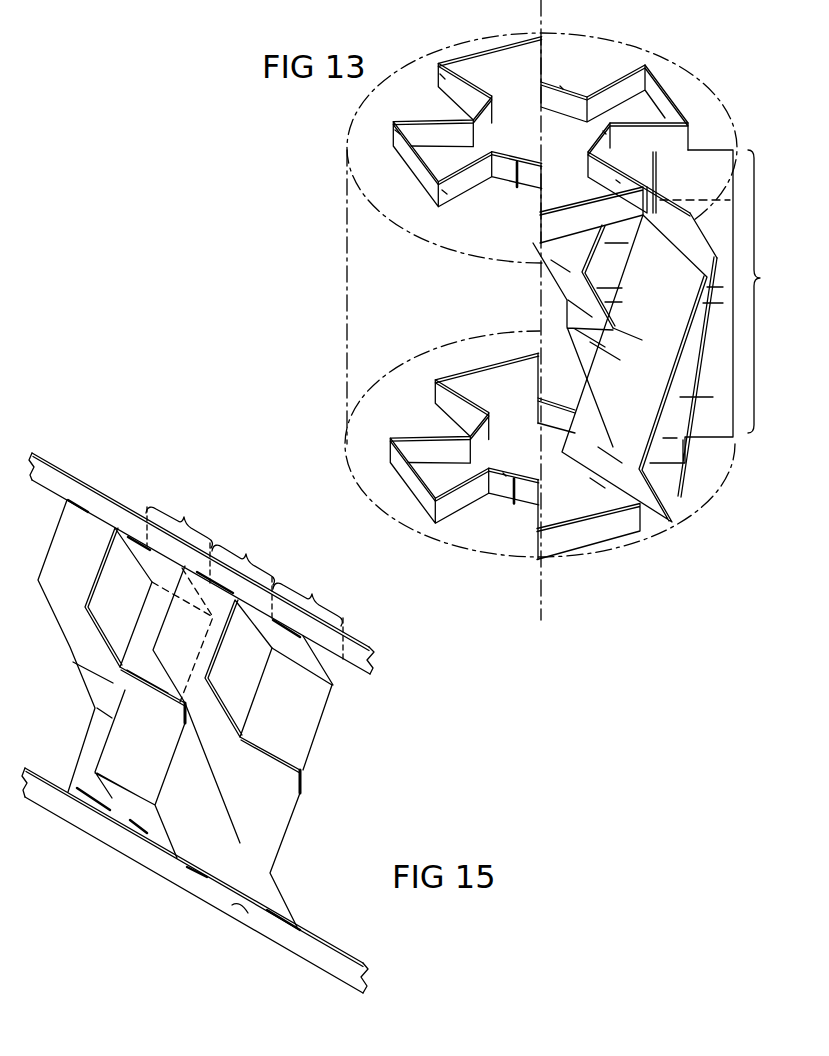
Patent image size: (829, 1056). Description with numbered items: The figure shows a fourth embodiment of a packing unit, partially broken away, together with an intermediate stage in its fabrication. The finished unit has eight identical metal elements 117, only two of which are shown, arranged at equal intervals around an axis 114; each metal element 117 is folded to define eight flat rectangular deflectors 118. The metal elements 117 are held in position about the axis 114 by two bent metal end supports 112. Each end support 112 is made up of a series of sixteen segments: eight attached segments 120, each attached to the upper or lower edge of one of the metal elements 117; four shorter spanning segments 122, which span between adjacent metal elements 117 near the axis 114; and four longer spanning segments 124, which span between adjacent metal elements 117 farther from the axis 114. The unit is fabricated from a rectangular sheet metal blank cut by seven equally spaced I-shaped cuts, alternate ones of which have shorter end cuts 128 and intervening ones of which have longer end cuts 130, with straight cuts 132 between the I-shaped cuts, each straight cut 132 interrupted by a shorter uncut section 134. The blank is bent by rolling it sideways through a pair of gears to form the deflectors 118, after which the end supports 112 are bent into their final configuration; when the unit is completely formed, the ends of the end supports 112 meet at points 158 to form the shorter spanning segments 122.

In FIG. 13, the bent metal end support 112 is at (480, 49).
In FIG. 15, the bent metal end support 112 is at (56, 452).
In FIG. 13, the axis 114 is at (575, 1).
In FIG. 13, the metal element 117 is at (707, 365).
In FIG. 15, the metal element 117 is at (240, 913).
In FIG. 13, the flat rectangular deflector 118 is at (673, 240).
In FIG. 15, the flat rectangular deflector 118 is at (172, 632).
In FIG. 13, the attached segment 120 is at (627, 73).
In FIG. 15, the attached segment 120 is at (242, 557).
In FIG. 13, the shorter spanning segment 122 is at (560, 86).
In FIG. 15, the shorter spanning segment 122 is at (307, 615).
In FIG. 13, the longer spanning segment 124 is at (657, 97).
In FIG. 15, the longer spanning segment 124 is at (179, 521).
In FIG. 15, the shorter end cut 128 is at (181, 1046).
In FIG. 15, the longer end cut 130 is at (238, 1046).
In FIG. 13, the straight cut 132 is at (658, 186).
In FIG. 13, the uncut section 134 is at (613, 338).
In FIG. 15, the uncut section 134 is at (242, 749).
In FIG. 13, the meeting point 158 is at (517, 164).